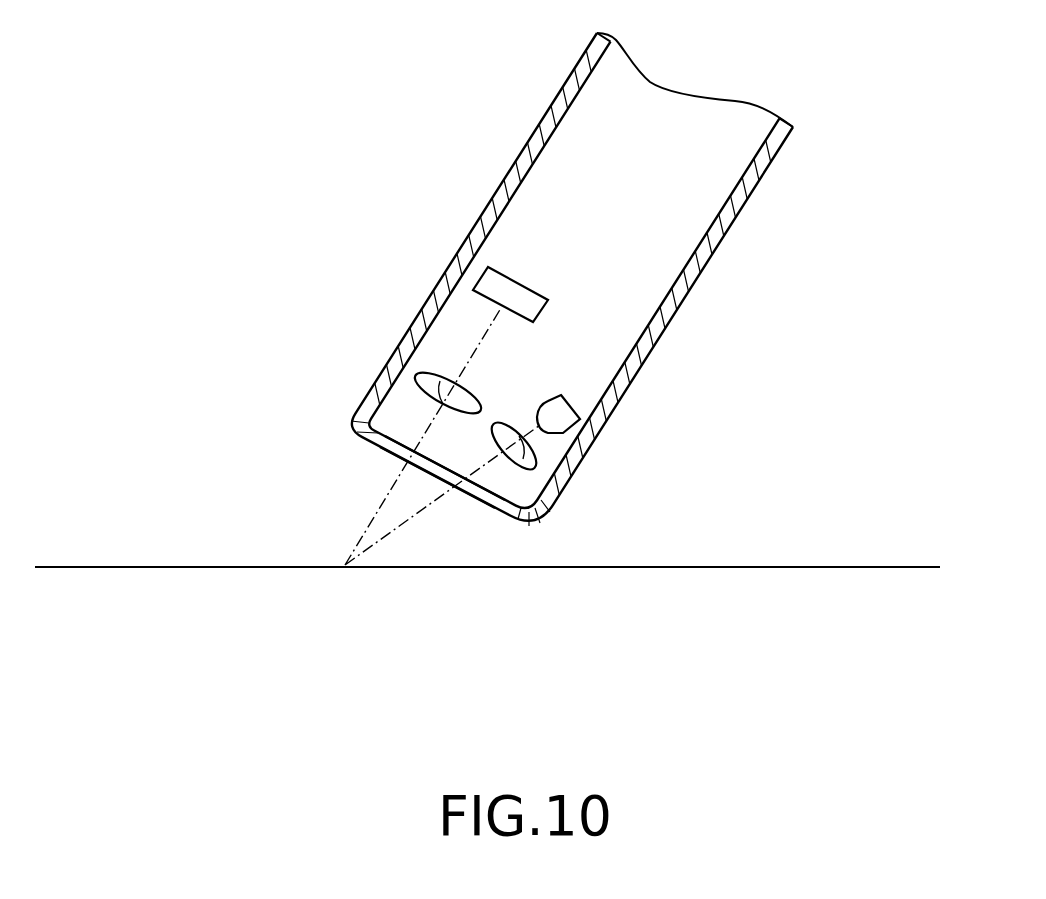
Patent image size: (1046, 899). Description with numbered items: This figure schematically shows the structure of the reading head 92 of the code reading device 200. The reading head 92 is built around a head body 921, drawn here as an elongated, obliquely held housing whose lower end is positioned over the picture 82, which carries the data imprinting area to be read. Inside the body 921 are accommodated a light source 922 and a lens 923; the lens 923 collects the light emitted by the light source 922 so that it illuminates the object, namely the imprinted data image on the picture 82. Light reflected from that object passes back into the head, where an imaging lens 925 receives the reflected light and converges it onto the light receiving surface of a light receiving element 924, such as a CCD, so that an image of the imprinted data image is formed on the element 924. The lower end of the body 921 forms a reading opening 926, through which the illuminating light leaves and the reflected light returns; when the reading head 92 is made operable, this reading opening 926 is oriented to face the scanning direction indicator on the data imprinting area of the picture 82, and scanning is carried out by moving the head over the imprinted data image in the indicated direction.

The code reading device 200 is at (300, 93).
The reading head 92 is at (462, 192).
The head body 921 is at (428, 292).
The light source 922 is at (568, 393).
The lens 923 is at (536, 458).
The light receiving element 924 is at (548, 270).
The imaging lens 925 is at (515, 378).
The reading opening 926 is at (390, 452).
The picture 82 is at (752, 567).